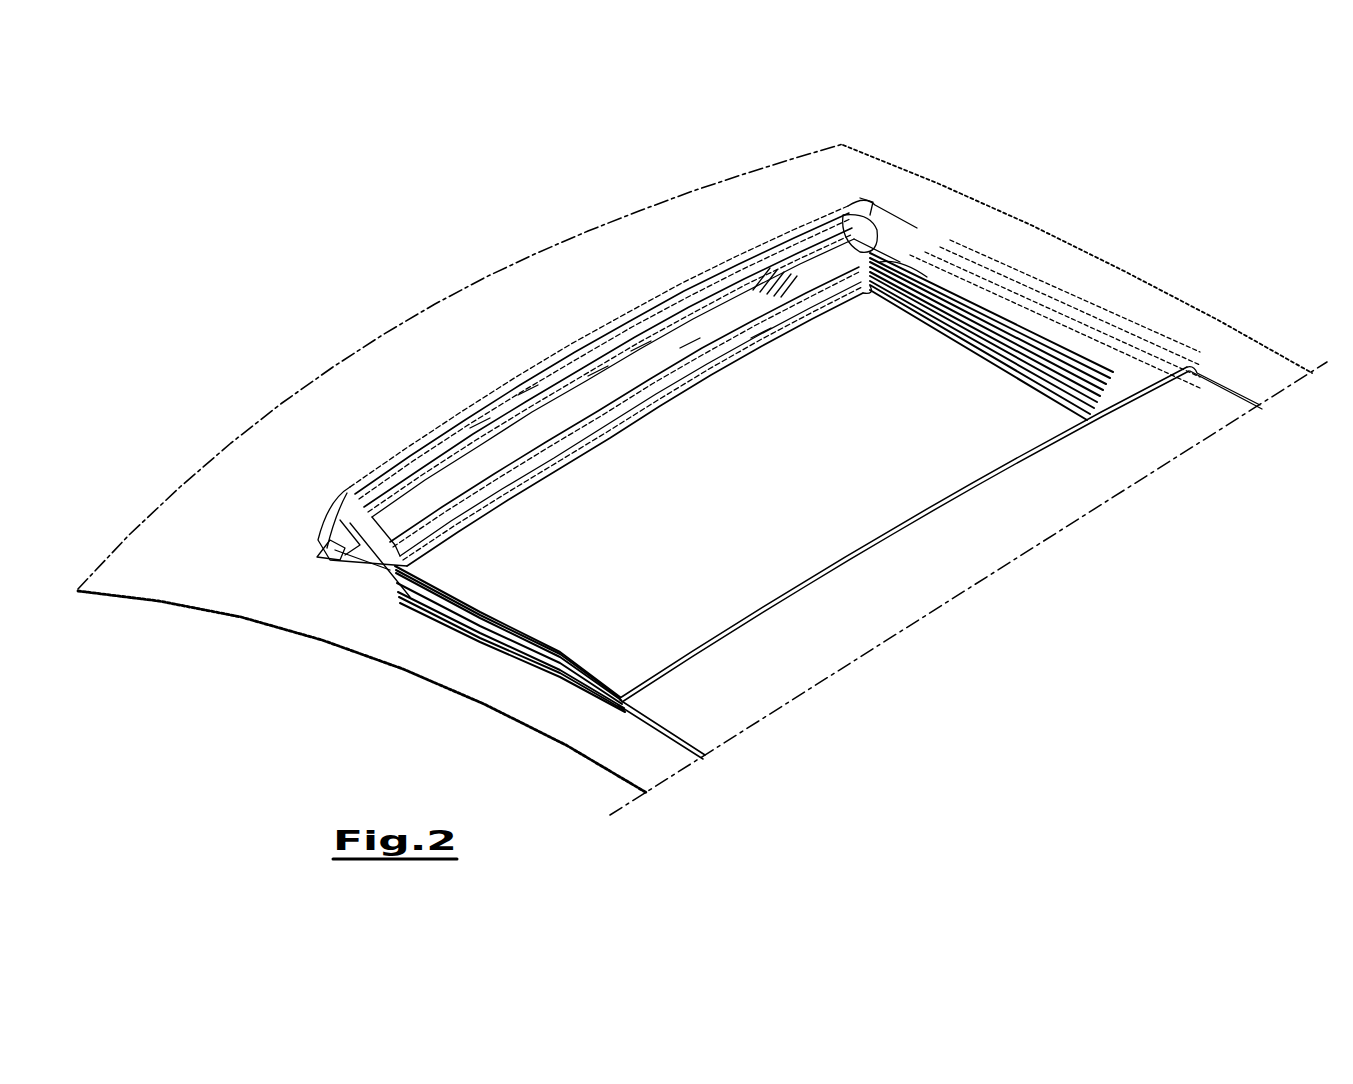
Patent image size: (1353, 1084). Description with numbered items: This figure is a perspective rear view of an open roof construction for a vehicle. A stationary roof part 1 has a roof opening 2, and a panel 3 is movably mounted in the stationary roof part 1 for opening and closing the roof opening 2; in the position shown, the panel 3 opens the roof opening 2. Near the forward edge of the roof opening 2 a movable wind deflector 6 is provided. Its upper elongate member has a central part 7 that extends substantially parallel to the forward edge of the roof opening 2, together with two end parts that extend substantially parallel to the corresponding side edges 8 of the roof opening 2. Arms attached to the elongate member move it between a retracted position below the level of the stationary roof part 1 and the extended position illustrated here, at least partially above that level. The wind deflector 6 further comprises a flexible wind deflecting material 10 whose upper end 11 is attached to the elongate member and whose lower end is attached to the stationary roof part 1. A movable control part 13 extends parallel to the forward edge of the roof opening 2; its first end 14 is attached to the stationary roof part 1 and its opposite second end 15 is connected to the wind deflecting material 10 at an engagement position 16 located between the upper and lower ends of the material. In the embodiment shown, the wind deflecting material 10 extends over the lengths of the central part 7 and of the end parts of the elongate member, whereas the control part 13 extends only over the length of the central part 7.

The stationary roof part 1 is at (573, 263).
The roof opening 2 is at (940, 563).
The panel 3 is at (940, 567).
The wind deflector 6 is at (718, 258).
The central part 7 is at (397, 420).
The side edges 8 is at (980, 358).
The flexible wind deflecting material 10 is at (473, 430).
The upper end 11 is at (520, 397).
The movable control part 13 is at (682, 350).
The first end 14 is at (753, 340).
The second end 15 is at (633, 353).
The engagement position 16 is at (590, 378).